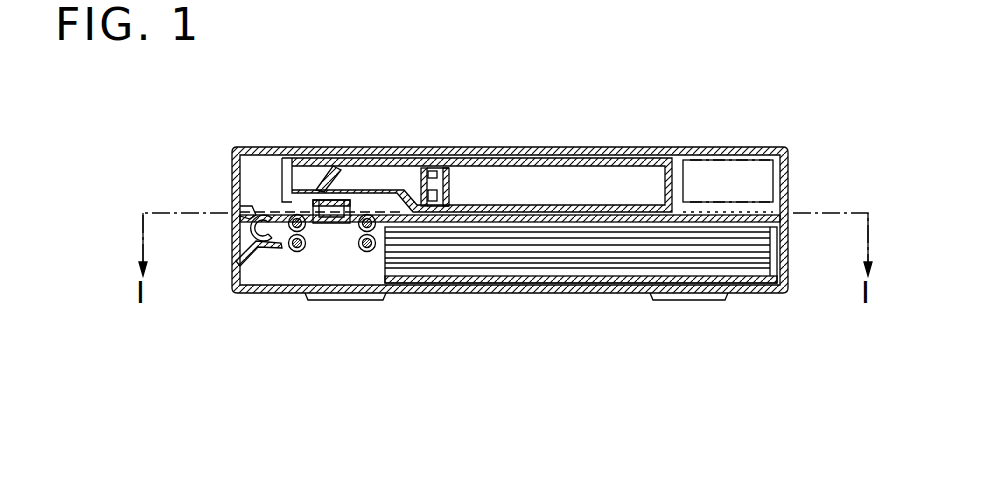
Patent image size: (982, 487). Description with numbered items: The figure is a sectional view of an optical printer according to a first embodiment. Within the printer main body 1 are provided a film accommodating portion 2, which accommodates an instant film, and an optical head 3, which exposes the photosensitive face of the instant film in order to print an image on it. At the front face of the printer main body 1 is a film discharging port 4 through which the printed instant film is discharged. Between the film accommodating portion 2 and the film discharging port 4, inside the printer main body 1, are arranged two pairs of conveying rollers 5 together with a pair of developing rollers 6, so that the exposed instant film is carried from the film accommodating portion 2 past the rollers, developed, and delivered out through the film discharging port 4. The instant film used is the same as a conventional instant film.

The printer main body 1 is at (655, 138).
The film accommodating portion 2 is at (568, 282).
The optical head 3 is at (337, 230).
The film discharging port 4 is at (218, 196).
The conveying rollers 5 is at (365, 257).
The developing rollers 6 is at (292, 257).